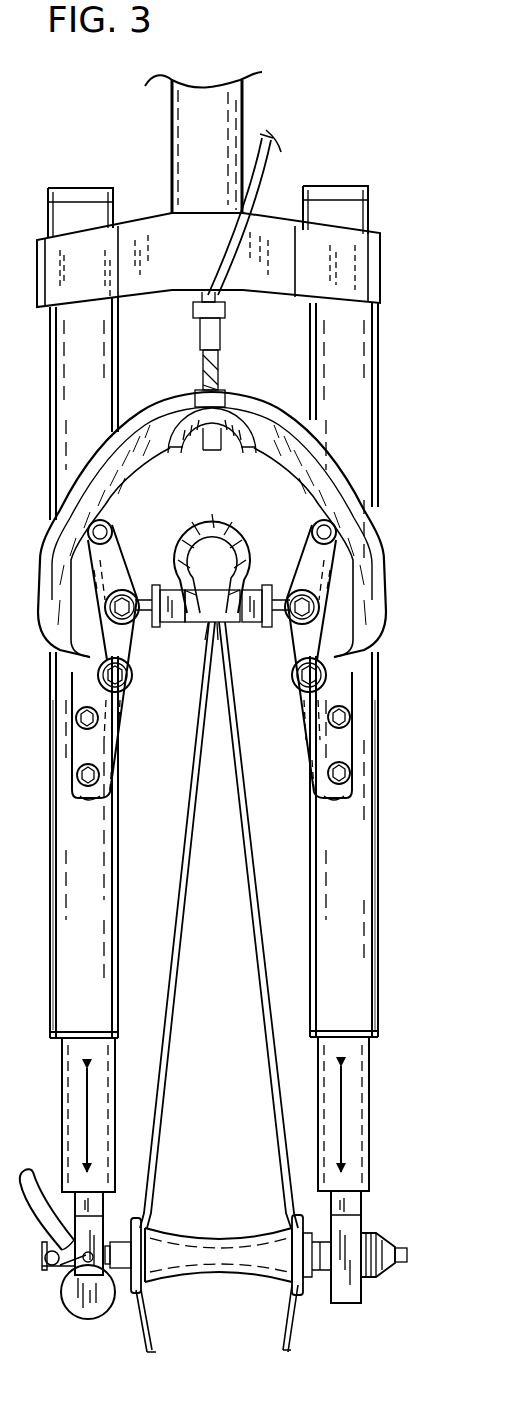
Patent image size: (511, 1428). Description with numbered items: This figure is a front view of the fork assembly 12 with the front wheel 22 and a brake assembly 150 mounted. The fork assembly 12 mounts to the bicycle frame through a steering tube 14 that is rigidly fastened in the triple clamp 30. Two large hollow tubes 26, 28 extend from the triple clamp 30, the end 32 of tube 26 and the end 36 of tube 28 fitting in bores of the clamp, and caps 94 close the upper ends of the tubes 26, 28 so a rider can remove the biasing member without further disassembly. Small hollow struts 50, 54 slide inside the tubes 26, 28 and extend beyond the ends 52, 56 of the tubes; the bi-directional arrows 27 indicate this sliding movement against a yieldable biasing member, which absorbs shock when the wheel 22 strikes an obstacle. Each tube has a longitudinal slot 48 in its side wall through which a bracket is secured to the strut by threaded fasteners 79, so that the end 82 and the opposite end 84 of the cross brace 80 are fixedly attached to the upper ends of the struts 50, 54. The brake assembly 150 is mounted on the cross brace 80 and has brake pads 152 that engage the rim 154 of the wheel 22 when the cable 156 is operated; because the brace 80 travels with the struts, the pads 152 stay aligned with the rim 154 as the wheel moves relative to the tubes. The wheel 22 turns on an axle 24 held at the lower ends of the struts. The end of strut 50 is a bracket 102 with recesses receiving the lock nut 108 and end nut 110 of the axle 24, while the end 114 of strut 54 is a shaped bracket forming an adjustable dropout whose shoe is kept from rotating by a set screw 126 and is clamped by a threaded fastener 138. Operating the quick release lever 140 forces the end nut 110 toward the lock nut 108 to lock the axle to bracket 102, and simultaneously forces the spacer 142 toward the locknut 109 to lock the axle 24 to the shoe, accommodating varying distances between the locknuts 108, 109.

The fork assembly 12 is at (52, 170).
The steering tube 14 is at (172, 128).
The caps 94 is at (95, 187).
The end of tube 36 is at (45, 218).
The end of tube 32 is at (370, 215).
The triple clamp 30 is at (190, 253).
The cable 156 is at (218, 247).
The cross brace 80 is at (228, 445).
The brake assembly 150 is at (152, 546).
The front wheel 22 is at (250, 522).
The brake pads 152 is at (172, 625).
The rim 154 is at (225, 630).
The threaded fasteners 79 is at (80, 770).
The longitudinal slot 48 is at (95, 790).
The opposite end of cross brace 84 is at (73, 800).
The end of cross brace 82 is at (346, 800).
The tube 28 is at (60, 945).
The tube 26 is at (380, 922).
The end of tube 56 is at (56, 1030).
The end of tube 52 is at (378, 1028).
The strut 54 is at (60, 1082).
The strut 50 is at (365, 1118).
The spacer 142 is at (56, 1185).
The bi-directional arrows 27 is at (340, 1128).
The end of strut / shaped bracket 114 is at (105, 1215).
The bracket 102 is at (383, 1192).
The locknut 109 is at (110, 1245).
The lock nut 108 is at (325, 1277).
The end nut 110 is at (374, 1277).
The axle 24 is at (407, 1250).
The lever 140 is at (20, 1182).
The set screw 126 is at (57, 1272).
The threaded fastener 138 is at (88, 1302).